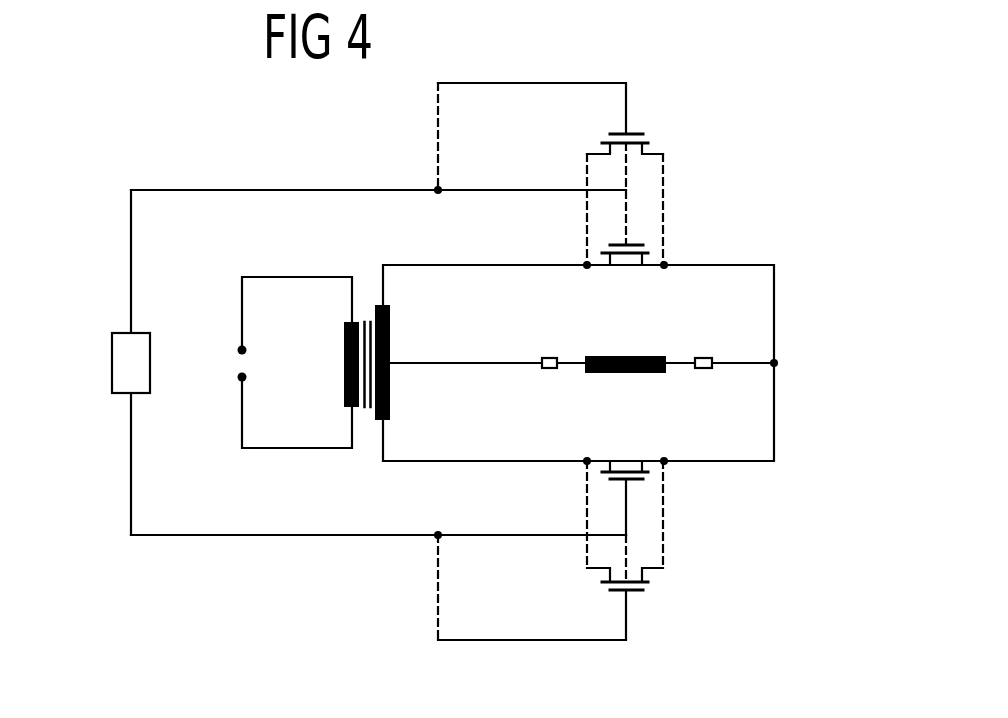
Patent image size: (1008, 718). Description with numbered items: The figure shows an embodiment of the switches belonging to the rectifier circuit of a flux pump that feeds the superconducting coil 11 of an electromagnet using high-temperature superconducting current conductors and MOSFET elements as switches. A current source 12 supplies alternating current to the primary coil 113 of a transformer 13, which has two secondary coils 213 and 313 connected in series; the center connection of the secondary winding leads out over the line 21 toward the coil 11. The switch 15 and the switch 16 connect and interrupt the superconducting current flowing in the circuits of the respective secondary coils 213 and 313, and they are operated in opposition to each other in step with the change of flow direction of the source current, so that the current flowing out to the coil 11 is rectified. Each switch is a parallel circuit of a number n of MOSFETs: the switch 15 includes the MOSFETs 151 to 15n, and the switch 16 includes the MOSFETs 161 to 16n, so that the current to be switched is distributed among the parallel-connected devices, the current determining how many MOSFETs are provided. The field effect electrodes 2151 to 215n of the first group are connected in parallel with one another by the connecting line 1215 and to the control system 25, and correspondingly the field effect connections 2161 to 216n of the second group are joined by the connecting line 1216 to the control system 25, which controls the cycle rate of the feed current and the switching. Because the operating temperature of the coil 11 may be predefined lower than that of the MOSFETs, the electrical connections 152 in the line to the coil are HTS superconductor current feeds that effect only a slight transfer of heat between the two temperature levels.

The superconducting coil 11 is at (626, 375).
The current source 12 is at (237, 362).
The transformer 13 is at (370, 418).
The switch 15 is at (641, 151).
The MOSFET 15n is at (620, 95).
The MOSFET 151 is at (612, 206).
The switch 16 is at (641, 578).
The MOSFET 16n is at (619, 631).
The MOSFET 161 is at (611, 522).
The line 21 is at (498, 361).
The control system 25 is at (111, 363).
The primary coil 113 is at (343, 362).
The electrical connection 152 is at (549, 357).
The secondary coil 213 is at (391, 325).
The secondary coil 313 is at (391, 400).
The field effect electrode 215n is at (584, 114).
The field effect electrode 2151 is at (578, 222).
The field effect connection 216n is at (582, 614).
The field effect connection 2161 is at (576, 504).
The connecting line 1215 is at (226, 189).
The connecting line 1216 is at (232, 537).